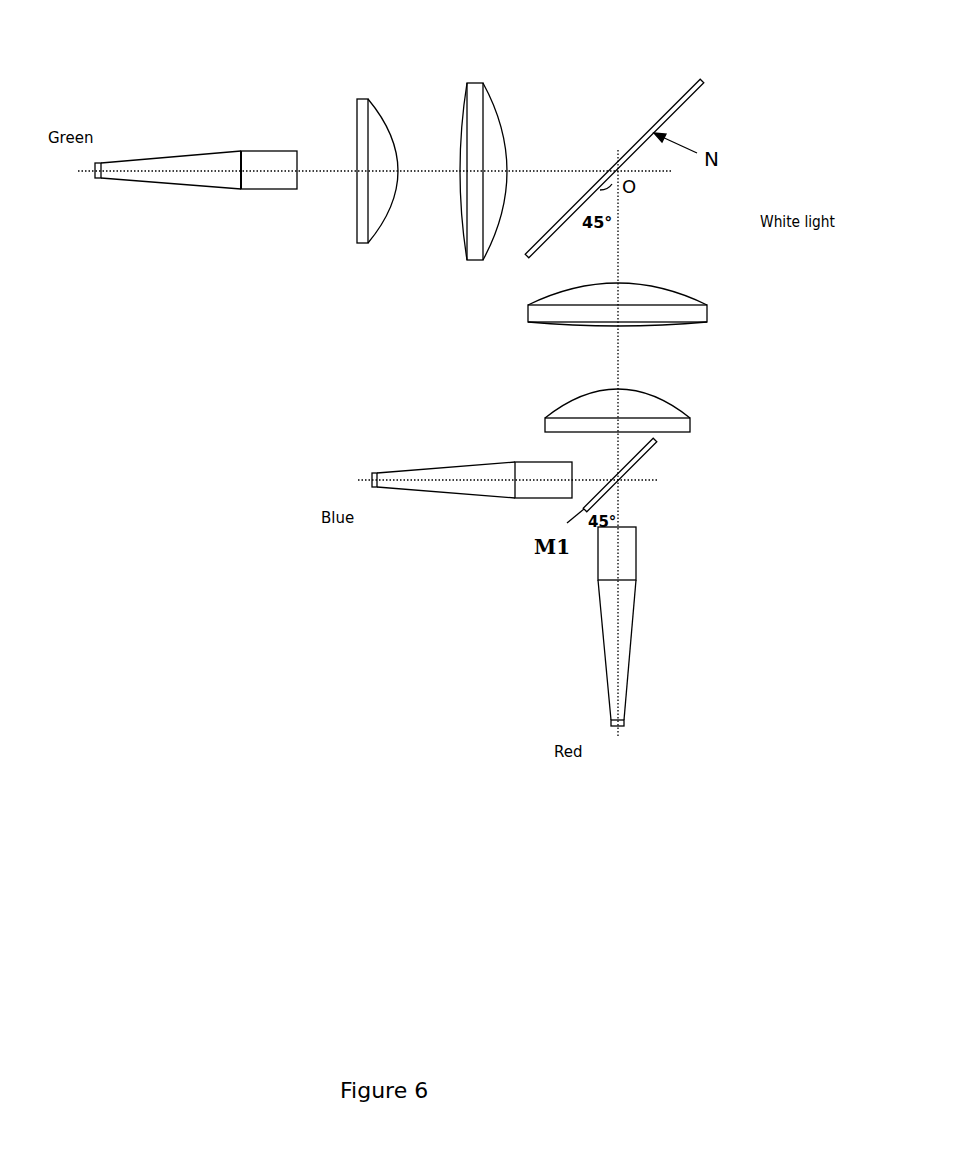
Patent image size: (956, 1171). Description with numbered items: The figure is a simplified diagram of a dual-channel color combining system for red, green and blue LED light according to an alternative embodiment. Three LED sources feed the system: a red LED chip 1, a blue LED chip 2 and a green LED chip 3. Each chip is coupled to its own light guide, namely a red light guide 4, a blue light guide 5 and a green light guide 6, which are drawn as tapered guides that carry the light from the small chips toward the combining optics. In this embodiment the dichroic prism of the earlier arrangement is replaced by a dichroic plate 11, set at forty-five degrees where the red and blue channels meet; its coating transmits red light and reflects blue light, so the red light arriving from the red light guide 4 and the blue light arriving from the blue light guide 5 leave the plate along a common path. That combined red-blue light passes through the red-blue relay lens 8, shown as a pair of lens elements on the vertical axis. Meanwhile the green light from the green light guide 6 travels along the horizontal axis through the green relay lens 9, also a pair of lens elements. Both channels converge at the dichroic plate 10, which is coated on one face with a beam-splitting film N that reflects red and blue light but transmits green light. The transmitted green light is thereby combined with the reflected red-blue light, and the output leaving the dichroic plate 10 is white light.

The red LED chip 1 is at (622, 727).
The blue LED chip 2 is at (372, 474).
The green LED chip 3 is at (95, 171).
The red light guide 4 is at (615, 632).
The blue light guide 5 is at (447, 481).
The green light guide 6 is at (188, 163).
The red-blue relay lens 8 is at (672, 358).
The green relay lens 9 is at (423, 123).
The dichroic plate 10 is at (636, 142).
The dichroic plate 11 is at (647, 455).